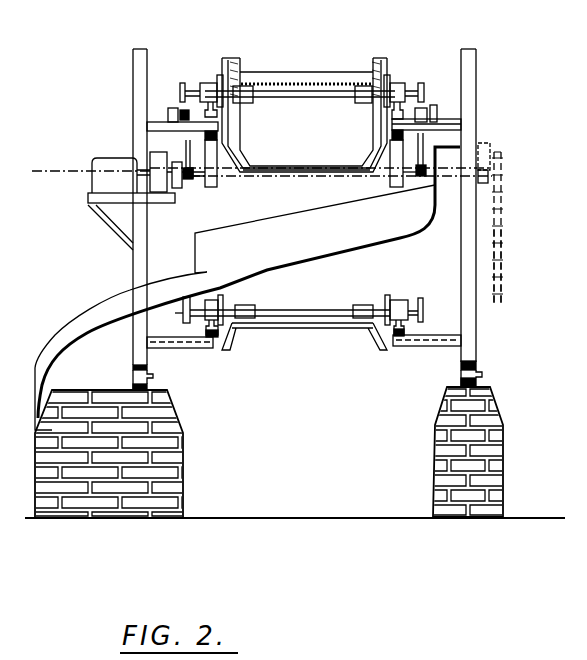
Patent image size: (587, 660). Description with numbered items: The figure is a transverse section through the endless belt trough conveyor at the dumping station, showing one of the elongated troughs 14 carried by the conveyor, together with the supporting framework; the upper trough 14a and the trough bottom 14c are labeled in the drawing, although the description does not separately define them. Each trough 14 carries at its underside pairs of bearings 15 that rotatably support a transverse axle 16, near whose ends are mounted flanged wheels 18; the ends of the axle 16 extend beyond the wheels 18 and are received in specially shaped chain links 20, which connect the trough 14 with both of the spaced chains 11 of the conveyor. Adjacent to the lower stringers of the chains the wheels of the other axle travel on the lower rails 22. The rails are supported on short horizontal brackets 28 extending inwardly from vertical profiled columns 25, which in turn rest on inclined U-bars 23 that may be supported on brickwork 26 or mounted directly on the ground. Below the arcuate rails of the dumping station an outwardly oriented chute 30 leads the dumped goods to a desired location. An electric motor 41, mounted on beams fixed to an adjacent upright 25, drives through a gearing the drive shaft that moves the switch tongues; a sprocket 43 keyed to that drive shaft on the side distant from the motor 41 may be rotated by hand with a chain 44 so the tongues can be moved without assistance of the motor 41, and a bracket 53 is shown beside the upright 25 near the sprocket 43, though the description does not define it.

The chains 11 is at (422, 298).
The troughs 14 is at (315, 328).
The upper trough 14a is at (296, 80).
The trough bottom 14c is at (283, 165).
The bearings 15 is at (243, 96).
The transverse axle 16 is at (307, 97).
The flanged wheels 18 is at (210, 83).
The special chain links 20 is at (184, 83).
The lower rails 22 is at (207, 333).
The inclined U-bars 23 is at (150, 377).
The vertical profiled columns 25 is at (473, 70).
The brickwork 26 is at (177, 459).
The horizontal brackets 28 is at (157, 120).
The chute 30 is at (283, 263).
The electric motor 41 is at (104, 158).
The sprocket 43 is at (503, 160).
The chain 44 is at (502, 252).
The bracket 53 is at (485, 143).